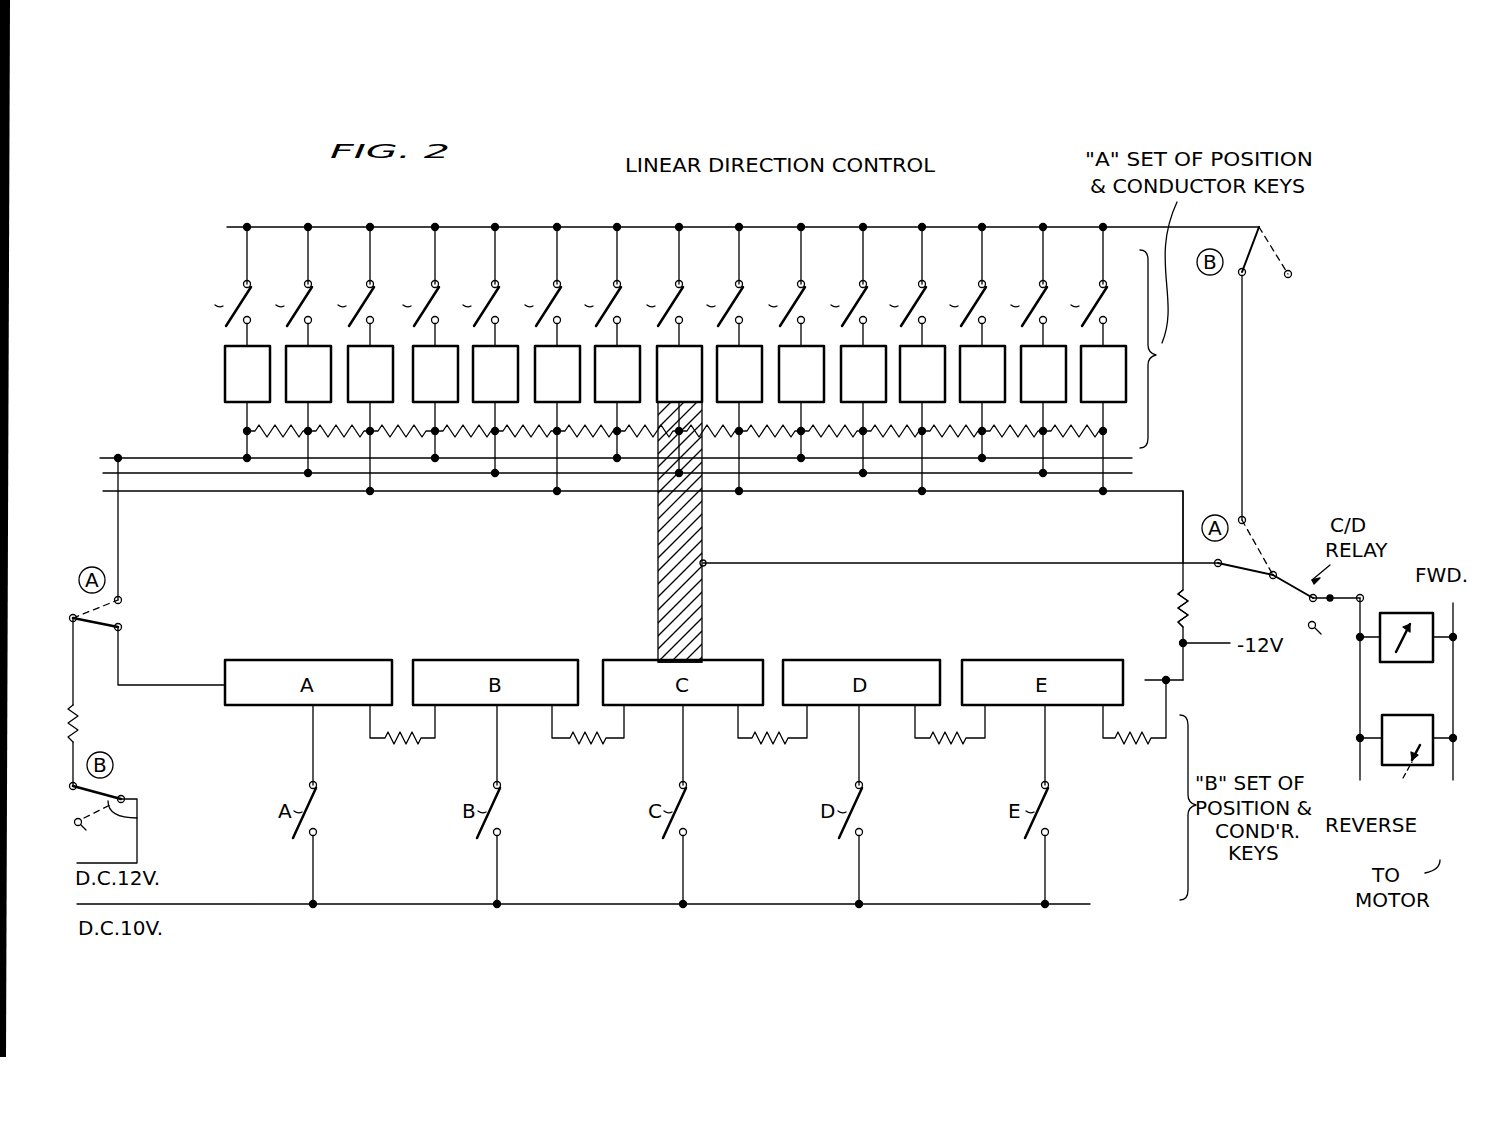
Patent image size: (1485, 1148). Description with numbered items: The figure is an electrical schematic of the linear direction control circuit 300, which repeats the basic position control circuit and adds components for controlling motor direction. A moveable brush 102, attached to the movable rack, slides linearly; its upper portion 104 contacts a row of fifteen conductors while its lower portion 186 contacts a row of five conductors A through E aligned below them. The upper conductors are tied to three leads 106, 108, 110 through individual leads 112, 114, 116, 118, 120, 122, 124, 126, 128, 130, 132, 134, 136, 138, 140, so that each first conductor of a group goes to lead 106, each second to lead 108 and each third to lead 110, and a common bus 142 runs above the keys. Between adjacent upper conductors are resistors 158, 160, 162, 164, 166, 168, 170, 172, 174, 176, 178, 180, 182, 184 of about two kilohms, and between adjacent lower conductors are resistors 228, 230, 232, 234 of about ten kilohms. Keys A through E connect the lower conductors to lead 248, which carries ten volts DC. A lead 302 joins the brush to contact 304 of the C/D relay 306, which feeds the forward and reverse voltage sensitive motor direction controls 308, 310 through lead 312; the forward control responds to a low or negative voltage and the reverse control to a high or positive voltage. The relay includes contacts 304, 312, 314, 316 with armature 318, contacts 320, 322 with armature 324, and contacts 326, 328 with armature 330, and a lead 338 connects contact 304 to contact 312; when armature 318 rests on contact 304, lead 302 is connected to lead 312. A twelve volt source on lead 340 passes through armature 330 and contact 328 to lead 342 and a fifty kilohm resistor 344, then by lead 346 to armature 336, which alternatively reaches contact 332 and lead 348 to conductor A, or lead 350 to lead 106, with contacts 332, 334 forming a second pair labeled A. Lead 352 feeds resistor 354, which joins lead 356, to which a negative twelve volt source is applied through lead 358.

The moveable brush 102 is at (703, 517).
The upper portion of the brush 104 is at (672, 420).
The lead 106 is at (107, 459).
The lead 108 is at (106, 475).
The lead 110 is at (106, 493).
The lead 112 is at (238, 418).
The lead 114 is at (299, 418).
The lead 116 is at (361, 418).
The lead 118 is at (426, 418).
The lead 120 is at (486, 418).
The lead 122 is at (548, 418).
The lead 124 is at (608, 418).
The lead 126 is at (670, 418).
The lead 128 is at (737, 418).
The lead 130 is at (792, 418).
The lead 132 is at (854, 418).
The lead 134 is at (913, 418).
The lead 136 is at (973, 418).
The lead 138 is at (1034, 418).
The lead 140 is at (1094, 418).
The supply bus 142 is at (567, 227).
The resistor 158 is at (257, 442).
The resistor 160 is at (318, 442).
The resistor 162 is at (380, 442).
The resistor 164 is at (445, 442).
The resistor 166 is at (505, 442).
The resistor 168 is at (567, 442).
The resistor 170 is at (627, 442).
The resistor 172 is at (707, 442).
The resistor 174 is at (749, 442).
The resistor 176 is at (811, 442).
The resistor 178 is at (873, 442).
The resistor 180 is at (932, 442).
The resistor 182 is at (992, 442).
The resistor 184 is at (1053, 442).
The lower portion of the brush 186 is at (704, 645).
The resistor 228 is at (392, 748).
The resistor 230 is at (576, 748).
The resistor 232 is at (758, 748).
The resistor 234 is at (938, 748).
The lead 248 is at (598, 904).
The circuit 300 is at (1126, 902).
The lead 302 is at (888, 560).
The contact 304 is at (1217, 565).
The C/D relay 306 is at (1277, 570).
The voltage sensitive motor direction control 308 is at (1420, 589).
The voltage sensitive motor direction control 310 is at (1419, 714).
The lead 312 is at (1310, 600).
The contact 314 is at (1248, 517).
The contact 316 is at (1314, 644).
The armature 318 is at (1249, 585).
The contact 320 is at (1236, 275).
The contact 322 is at (1292, 272).
The armature 324 is at (1250, 250).
The contact 326 is at (92, 829).
The contact 328 is at (105, 786).
The armature 330 is at (137, 818).
The contact 332 is at (129, 619).
The contact 334 is at (121, 597).
The armature 336 is at (95, 620).
The lead 338 is at (1298, 582).
The lead 340 is at (128, 862).
The lead 342 is at (80, 745).
The resistor 344 is at (80, 703).
The lead 346 is at (73, 660).
The lead 348 is at (171, 656).
The lead 350 is at (118, 560).
The lead 352 is at (1183, 530).
The resistor 354 is at (1178, 607).
The lead 356 is at (1185, 663).
The lead 358 is at (1194, 652).